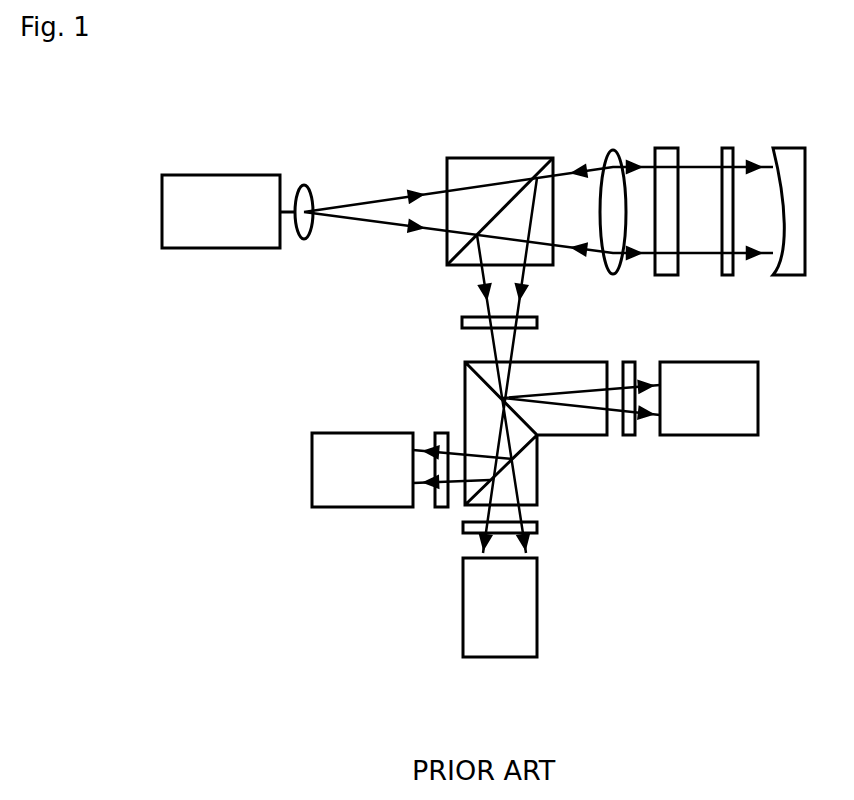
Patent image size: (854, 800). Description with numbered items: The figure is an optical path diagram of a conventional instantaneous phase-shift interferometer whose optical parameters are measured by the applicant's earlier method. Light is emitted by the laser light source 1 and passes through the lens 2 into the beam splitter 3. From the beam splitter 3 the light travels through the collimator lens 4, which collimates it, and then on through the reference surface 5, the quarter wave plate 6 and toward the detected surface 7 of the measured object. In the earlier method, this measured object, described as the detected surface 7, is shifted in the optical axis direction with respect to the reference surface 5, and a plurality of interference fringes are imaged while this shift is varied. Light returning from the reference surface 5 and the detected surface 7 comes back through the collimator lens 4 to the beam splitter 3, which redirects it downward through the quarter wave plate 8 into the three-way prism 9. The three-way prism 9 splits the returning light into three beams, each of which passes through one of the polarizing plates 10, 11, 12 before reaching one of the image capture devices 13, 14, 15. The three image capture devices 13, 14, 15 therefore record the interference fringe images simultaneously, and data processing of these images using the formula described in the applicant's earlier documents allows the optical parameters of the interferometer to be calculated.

The laser light source 1 is at (203, 184).
The lens 2 is at (306, 190).
The beam splitter 3 is at (477, 165).
The collimator lens 4 is at (615, 160).
The reference surface 5 is at (668, 158).
The quarter wave plate 6 is at (727, 158).
The detected surface 7 is at (785, 160).
The quarter wave plate 8 is at (540, 322).
The three-way prism 9 is at (528, 488).
The polarizing plate 10 is at (633, 362).
The polarizing plate 11 is at (540, 527).
The polarizing plate 12 is at (440, 433).
The image capture device 13 is at (703, 367).
The image capture device 14 is at (528, 600).
The image capture device 15 is at (328, 440).